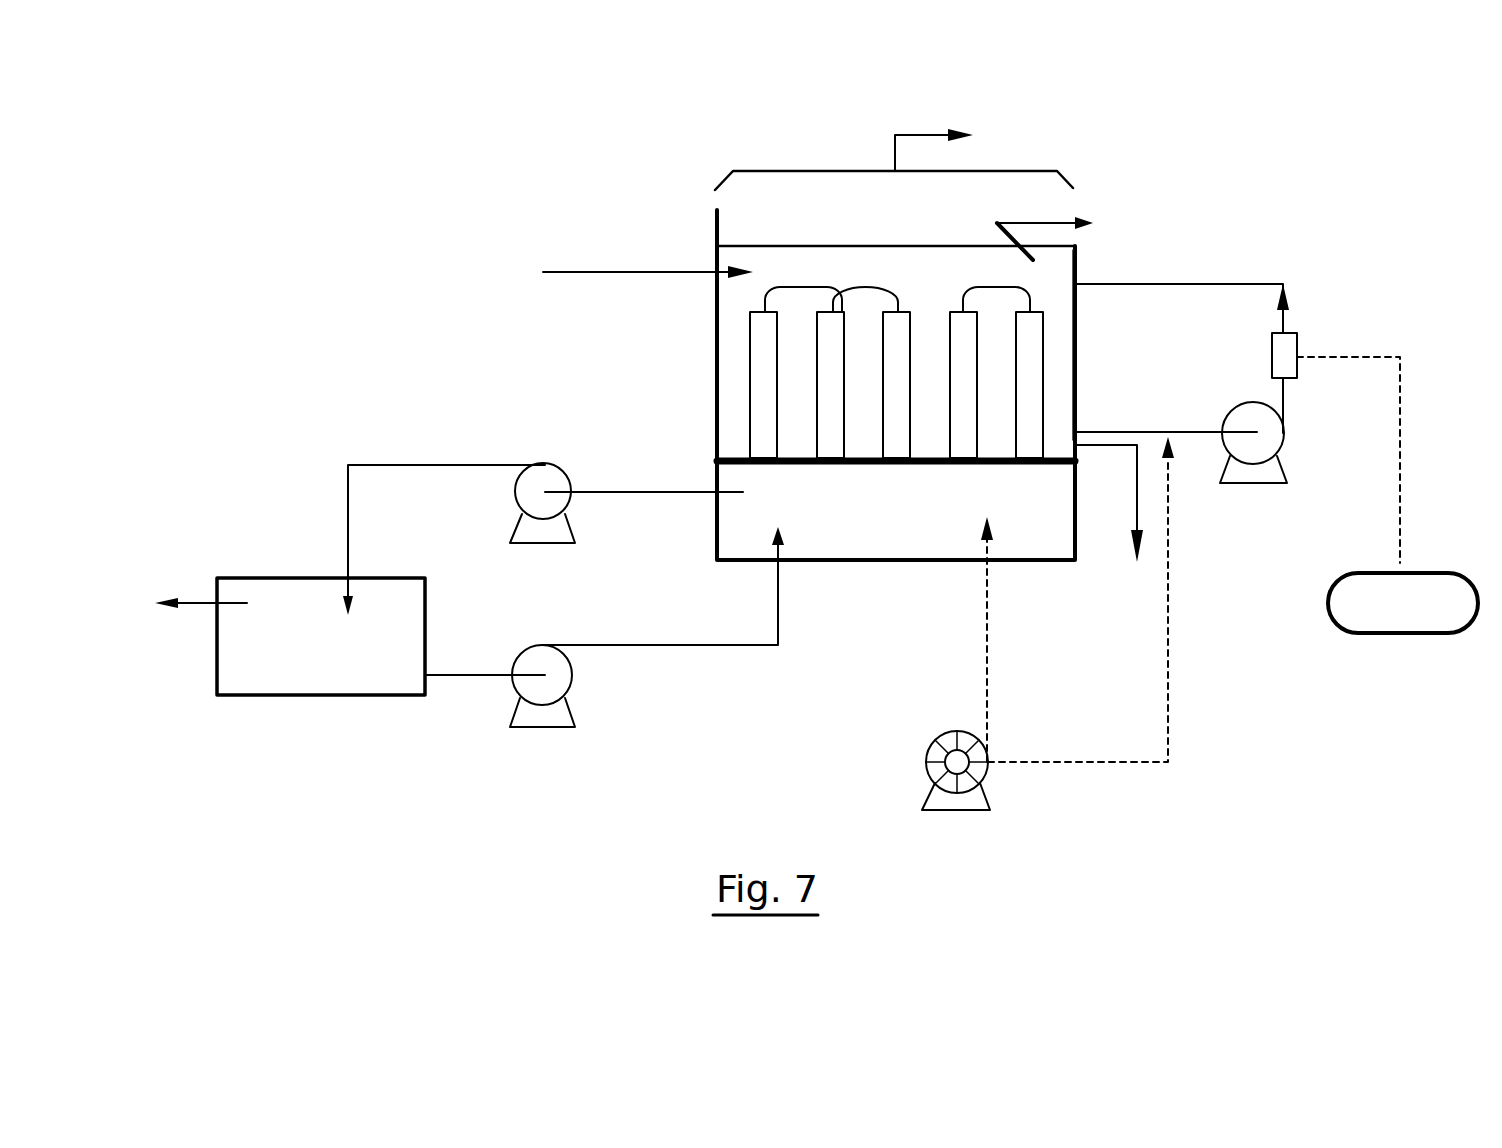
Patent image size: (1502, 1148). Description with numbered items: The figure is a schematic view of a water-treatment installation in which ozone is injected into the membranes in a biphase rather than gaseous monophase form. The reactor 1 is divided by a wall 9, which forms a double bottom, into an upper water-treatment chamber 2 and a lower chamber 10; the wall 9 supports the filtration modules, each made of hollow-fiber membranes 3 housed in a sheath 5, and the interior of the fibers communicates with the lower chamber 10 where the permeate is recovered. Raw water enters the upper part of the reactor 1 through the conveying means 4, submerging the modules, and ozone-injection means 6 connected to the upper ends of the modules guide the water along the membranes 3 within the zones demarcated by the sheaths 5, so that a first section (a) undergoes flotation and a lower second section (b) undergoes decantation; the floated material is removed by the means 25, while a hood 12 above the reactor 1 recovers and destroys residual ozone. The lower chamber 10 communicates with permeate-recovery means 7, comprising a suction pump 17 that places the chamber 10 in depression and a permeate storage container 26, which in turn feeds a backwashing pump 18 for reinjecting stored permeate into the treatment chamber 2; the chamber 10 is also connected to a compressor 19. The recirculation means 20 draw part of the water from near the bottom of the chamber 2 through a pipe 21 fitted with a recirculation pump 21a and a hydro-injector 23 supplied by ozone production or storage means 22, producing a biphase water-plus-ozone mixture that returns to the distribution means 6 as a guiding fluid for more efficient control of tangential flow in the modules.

The reactor 1 is at (700, 360).
The upper water-treatment chamber 2 is at (1060, 345).
The membranes 3 is at (760, 408).
The raw-water conveying means 4 is at (602, 265).
The sheath 5 is at (1045, 405).
The ozone-injection means 6 is at (763, 297).
The permeate-recovery means 7 is at (363, 432).
The wall 9 is at (1055, 467).
The lower chamber 10 is at (1028, 537).
The hood 12 is at (808, 170).
The suction pump 17 is at (538, 483).
The backwashing pump 18 is at (577, 677).
The compressor 19 is at (992, 800).
The recirculation means 20 is at (1228, 270).
The pipe 21 is at (1199, 432).
The recirculation pump 21a is at (1272, 432).
The ozone production or storage means 22 is at (1423, 617).
The hydro-injector 23 is at (1287, 350).
The floated-material removal means 25 is at (1095, 205).
The permeate storage container 26 is at (292, 672).